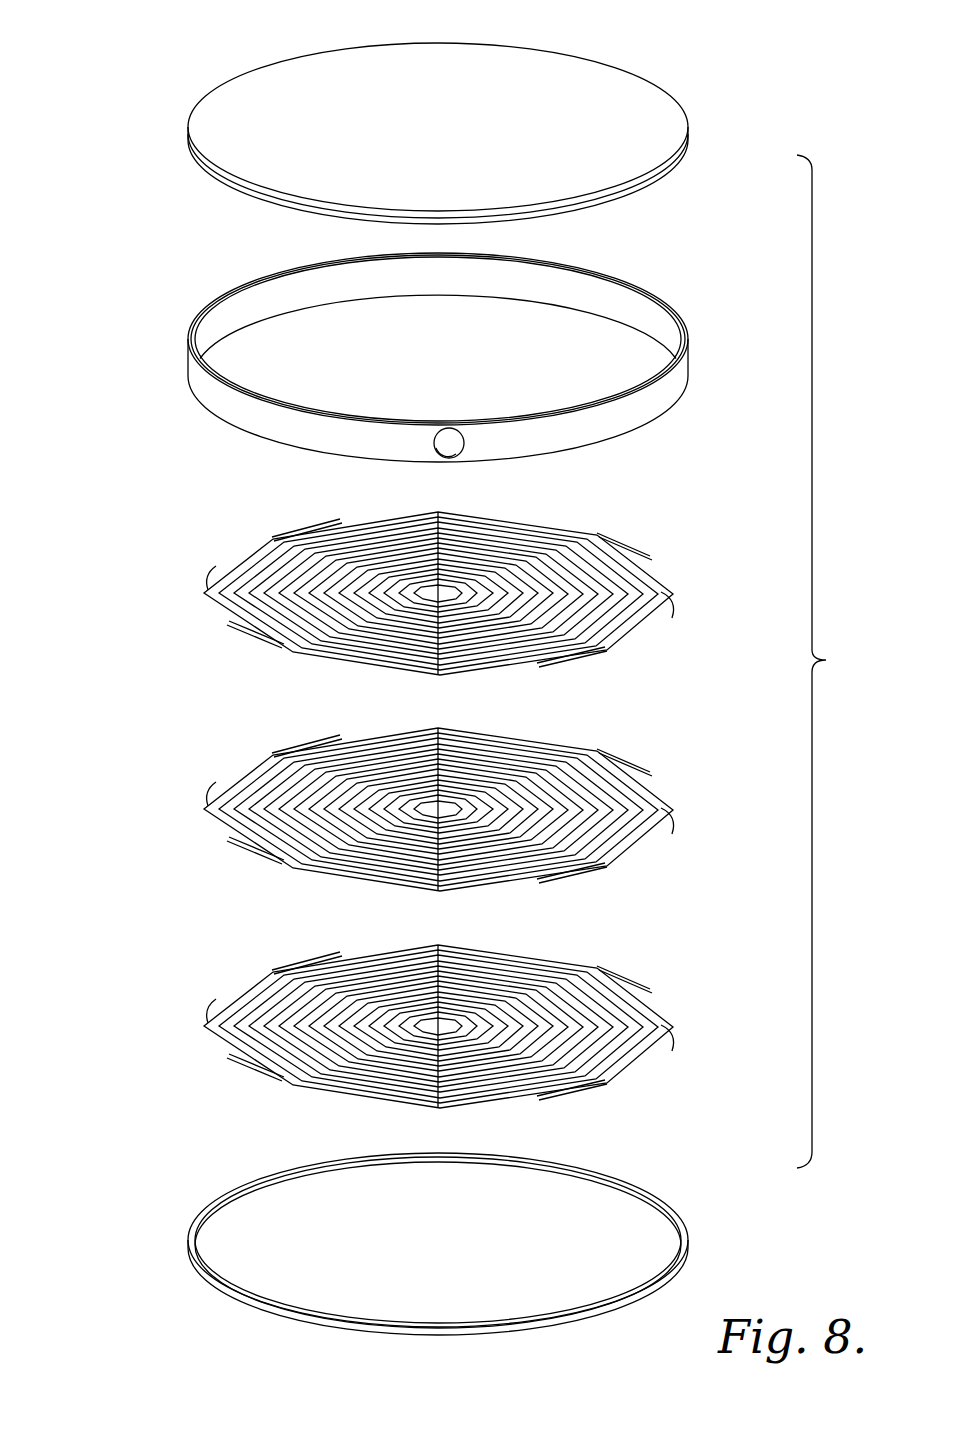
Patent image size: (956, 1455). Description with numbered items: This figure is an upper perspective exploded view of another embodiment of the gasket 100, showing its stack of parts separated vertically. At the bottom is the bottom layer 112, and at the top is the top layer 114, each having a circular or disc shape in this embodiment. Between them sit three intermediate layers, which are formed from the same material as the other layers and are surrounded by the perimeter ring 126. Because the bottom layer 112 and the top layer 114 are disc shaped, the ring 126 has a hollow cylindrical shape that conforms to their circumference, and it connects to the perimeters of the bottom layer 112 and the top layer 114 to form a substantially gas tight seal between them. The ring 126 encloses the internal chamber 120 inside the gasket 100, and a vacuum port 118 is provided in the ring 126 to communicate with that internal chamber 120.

The gasket 100 is at (305, 43).
The bottom layer 112 is at (253, 1232).
The top layer 114 is at (213, 118).
The vacuum port 118 is at (440, 430).
The internal chamber 120 is at (328, 330).
The perimeter ring 126 is at (207, 333).